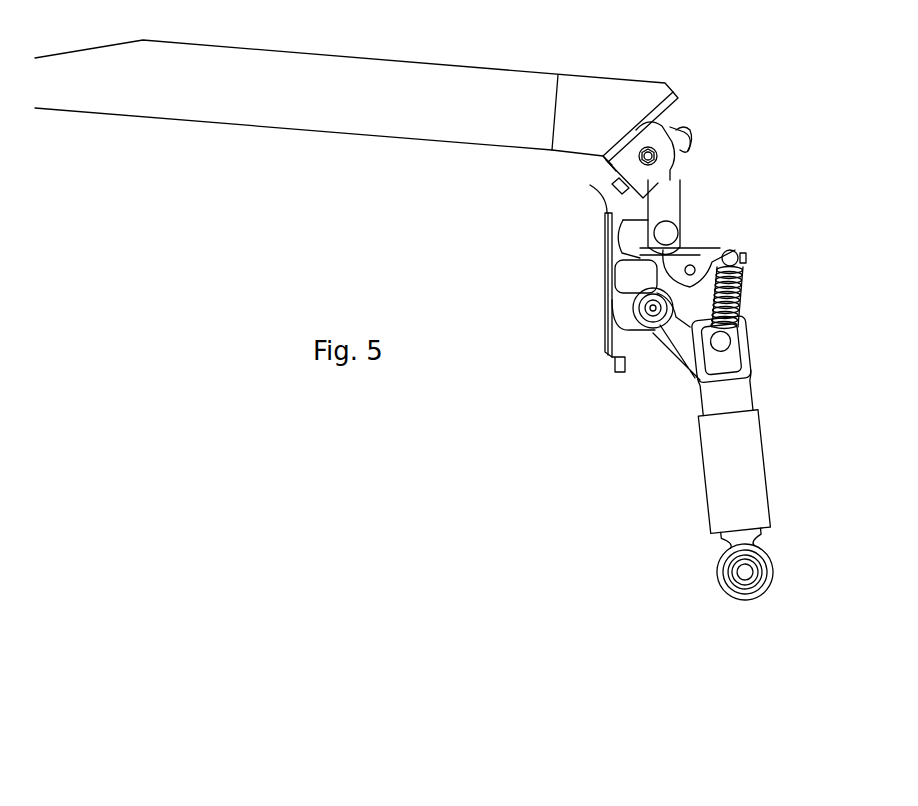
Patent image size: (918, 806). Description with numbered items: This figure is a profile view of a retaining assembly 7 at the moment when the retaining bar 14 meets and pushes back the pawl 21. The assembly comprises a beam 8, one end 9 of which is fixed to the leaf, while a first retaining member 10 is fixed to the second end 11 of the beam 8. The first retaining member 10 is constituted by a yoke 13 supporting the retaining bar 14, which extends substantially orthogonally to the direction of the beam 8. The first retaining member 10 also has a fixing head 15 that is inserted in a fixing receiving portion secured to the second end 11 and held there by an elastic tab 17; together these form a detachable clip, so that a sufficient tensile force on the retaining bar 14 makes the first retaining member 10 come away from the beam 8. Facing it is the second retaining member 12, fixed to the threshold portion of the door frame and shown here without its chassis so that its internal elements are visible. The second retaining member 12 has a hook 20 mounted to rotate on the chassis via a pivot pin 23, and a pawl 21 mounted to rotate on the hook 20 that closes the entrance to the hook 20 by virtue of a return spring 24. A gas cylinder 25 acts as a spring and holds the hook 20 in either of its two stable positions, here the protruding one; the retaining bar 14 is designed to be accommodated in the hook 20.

The retaining assembly 7 is at (755, 180).
The beam 8 is at (268, 70).
The end of the beam 9 is at (67, 52).
The first retaining member 10 is at (635, 202).
The second end of the beam 11 is at (635, 87).
The second retaining member 12 is at (745, 288).
The yoke 13 is at (682, 200).
The retaining bar 14 is at (681, 234).
The fixing head 15 is at (682, 130).
The elastic tab 17 is at (688, 148).
The hook 20 is at (617, 223).
The pawl 21 is at (713, 252).
The pivot pin 23 is at (655, 333).
The return spring 24 is at (740, 318).
The gas cylinder 25 is at (715, 490).